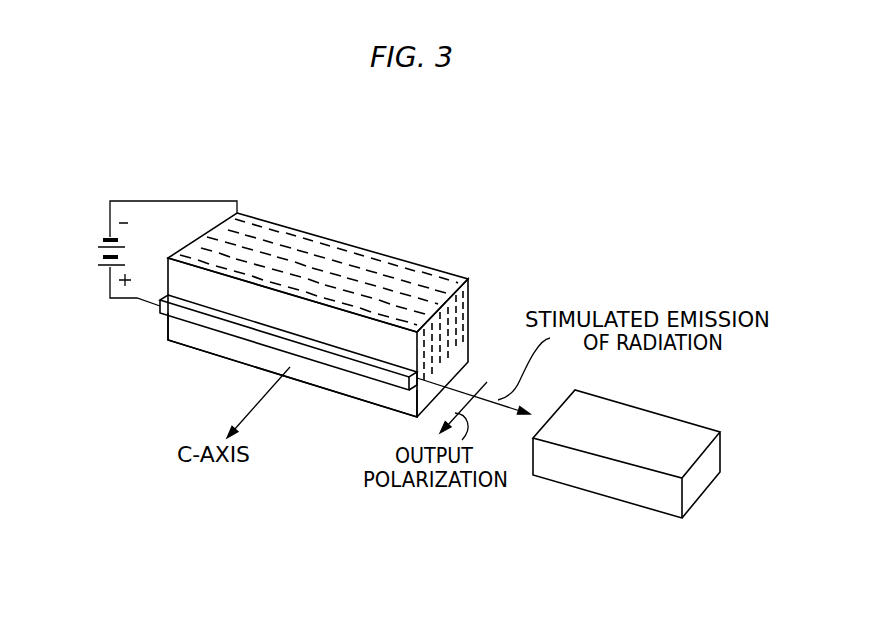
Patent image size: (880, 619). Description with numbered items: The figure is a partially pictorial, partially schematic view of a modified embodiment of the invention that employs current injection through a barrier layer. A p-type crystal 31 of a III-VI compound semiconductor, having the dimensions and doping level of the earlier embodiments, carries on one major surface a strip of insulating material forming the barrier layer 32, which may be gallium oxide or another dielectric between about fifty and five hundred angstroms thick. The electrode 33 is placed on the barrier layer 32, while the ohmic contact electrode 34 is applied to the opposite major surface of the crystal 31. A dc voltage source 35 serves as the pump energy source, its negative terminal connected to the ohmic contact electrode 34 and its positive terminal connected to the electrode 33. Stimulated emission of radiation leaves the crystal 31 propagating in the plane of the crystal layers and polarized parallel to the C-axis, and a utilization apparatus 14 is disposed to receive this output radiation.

The utilization apparatus 14 is at (620, 490).
The p-type crystal 31 is at (387, 278).
The barrier layer 32 is at (413, 400).
The electrode 33 is at (175, 315).
The ohmic contact electrode 34 is at (303, 233).
The dc voltage source 35 is at (127, 253).